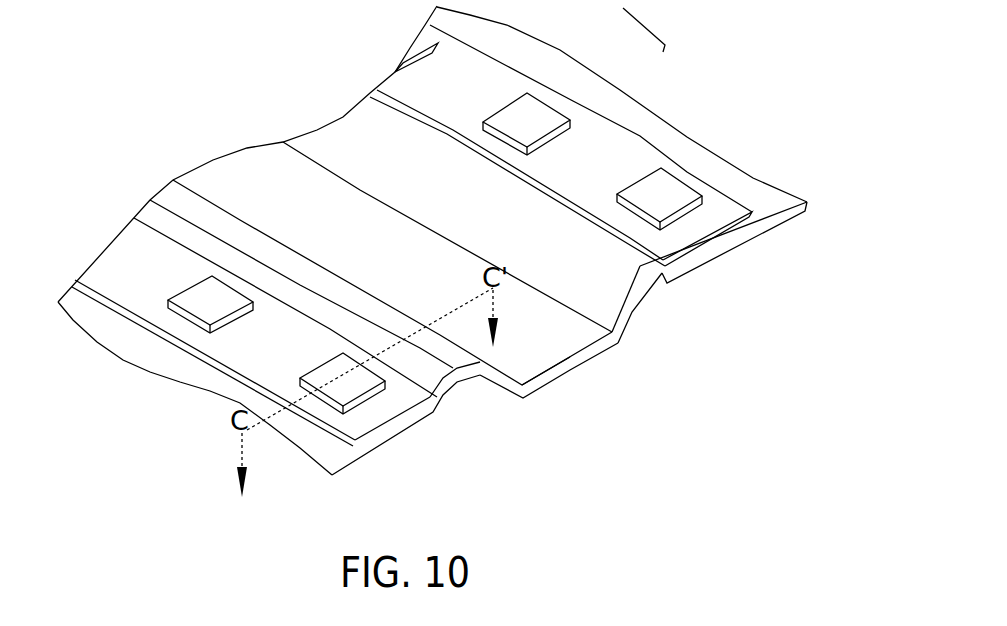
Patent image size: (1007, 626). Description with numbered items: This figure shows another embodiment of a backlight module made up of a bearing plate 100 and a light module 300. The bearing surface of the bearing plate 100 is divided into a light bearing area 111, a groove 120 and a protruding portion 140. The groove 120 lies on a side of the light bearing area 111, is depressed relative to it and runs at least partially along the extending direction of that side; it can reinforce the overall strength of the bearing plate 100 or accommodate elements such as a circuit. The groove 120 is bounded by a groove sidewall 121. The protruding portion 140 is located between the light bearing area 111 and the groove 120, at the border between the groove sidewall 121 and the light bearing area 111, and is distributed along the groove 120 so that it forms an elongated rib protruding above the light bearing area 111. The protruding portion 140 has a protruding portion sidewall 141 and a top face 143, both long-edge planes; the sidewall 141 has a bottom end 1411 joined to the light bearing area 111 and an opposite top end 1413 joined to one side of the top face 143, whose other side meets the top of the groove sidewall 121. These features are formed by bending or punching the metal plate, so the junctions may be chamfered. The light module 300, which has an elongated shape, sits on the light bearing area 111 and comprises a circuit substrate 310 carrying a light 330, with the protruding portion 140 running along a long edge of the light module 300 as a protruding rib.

The bearing plate 100 is at (446, 240).
The light bearing area 111 is at (411, 260).
The groove 120 is at (381, 219).
The groove sidewall 121 is at (698, 321).
The protruding portion 140 is at (525, 384).
The protruding portion sidewall 141 is at (529, 433).
The bottom end 1411 is at (453, 430).
The top end 1413 is at (408, 421).
The top face 143 is at (551, 441).
The light module 300 is at (657, 26).
The circuit substrate 310 is at (561, 145).
The light 330 is at (435, 215).